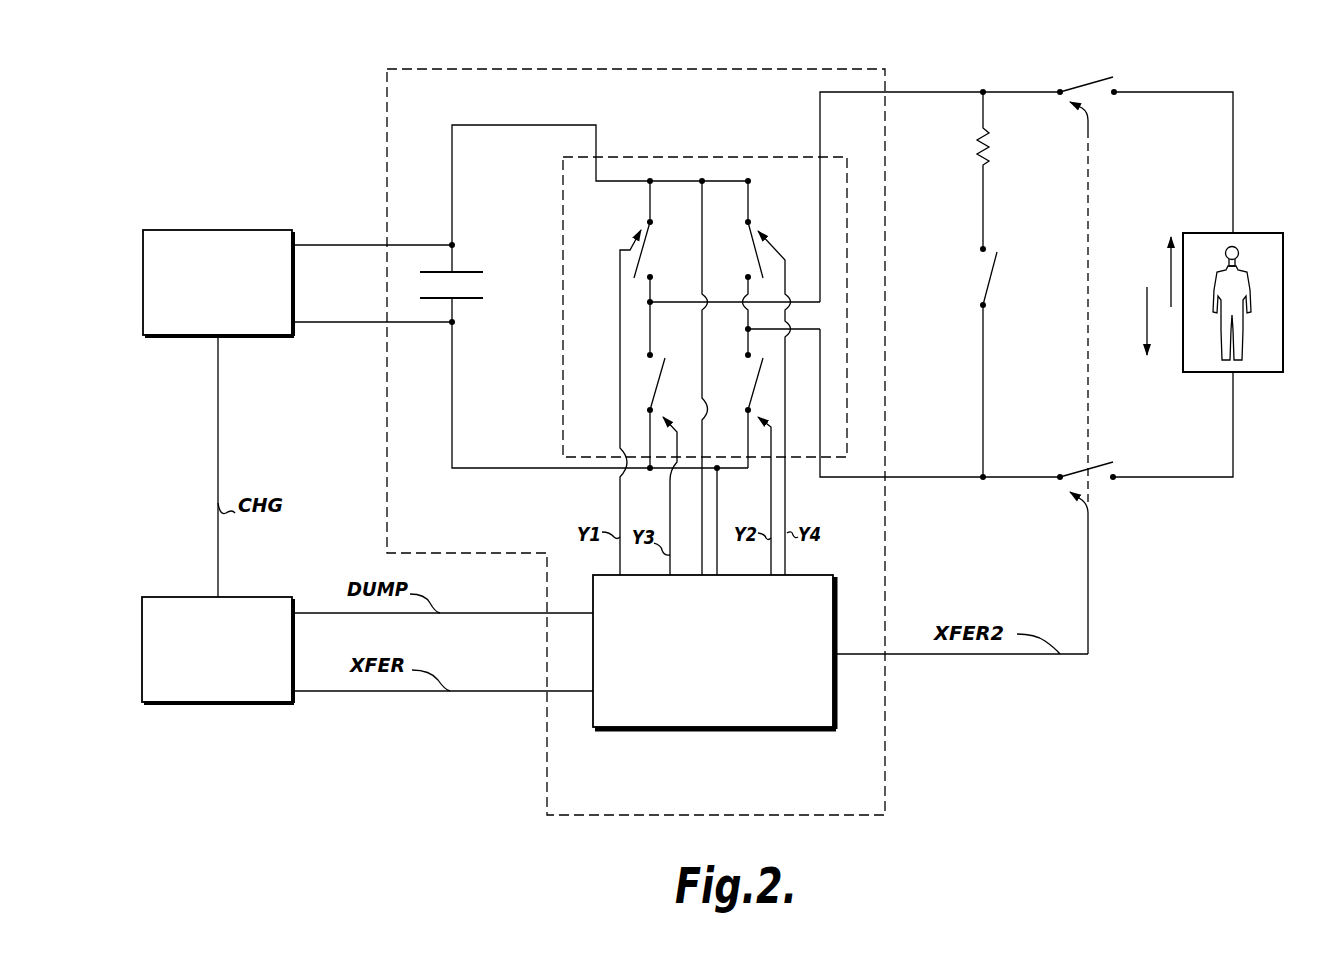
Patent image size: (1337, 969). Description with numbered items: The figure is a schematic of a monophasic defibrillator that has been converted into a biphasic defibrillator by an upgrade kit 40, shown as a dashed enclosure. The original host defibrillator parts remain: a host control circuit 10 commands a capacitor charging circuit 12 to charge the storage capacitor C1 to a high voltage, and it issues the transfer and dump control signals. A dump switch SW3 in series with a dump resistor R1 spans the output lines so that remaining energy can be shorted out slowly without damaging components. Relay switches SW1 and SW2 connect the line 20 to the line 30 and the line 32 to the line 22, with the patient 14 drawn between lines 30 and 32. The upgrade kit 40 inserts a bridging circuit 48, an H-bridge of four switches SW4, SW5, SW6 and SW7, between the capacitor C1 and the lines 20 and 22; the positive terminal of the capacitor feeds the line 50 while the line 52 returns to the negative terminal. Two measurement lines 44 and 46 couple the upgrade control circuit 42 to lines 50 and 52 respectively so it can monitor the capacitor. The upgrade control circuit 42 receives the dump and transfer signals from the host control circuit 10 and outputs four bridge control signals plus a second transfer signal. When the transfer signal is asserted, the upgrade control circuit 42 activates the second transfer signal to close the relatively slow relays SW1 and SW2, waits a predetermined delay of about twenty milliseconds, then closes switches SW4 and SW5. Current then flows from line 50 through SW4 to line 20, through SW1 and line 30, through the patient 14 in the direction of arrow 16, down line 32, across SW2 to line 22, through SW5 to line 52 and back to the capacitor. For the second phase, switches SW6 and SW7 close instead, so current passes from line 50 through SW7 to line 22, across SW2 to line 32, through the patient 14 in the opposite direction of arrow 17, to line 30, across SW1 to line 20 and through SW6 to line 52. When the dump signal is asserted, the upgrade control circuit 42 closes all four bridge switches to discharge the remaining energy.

The host control circuit 10 is at (142, 650).
The capacitor charging circuit 12 is at (143, 297).
The patient 14 is at (1283, 290).
The arrow 16 is at (1147, 317).
The arrow 17 is at (1171, 258).
The line 20 is at (650, 344).
The line 22 is at (747, 317).
The line 30 is at (1181, 92).
The line 32 is at (1182, 477).
The upgrade kit 40 is at (723, 69).
The upgrade control circuit 42 is at (707, 733).
The measurement line 44 is at (700, 530).
The measurement line 46 is at (717, 493).
The bridging circuit 48 is at (687, 157).
The line 50 is at (500, 125).
The line 52 is at (476, 469).
The storage capacitor C1 is at (459, 283).
The dump resistor R1 is at (997, 170).
The relay switch SW1 is at (1087, 85).
The relay switch SW2 is at (1097, 479).
The dump switch SW3 is at (991, 279).
The switch SW4 is at (628, 252).
The switch SW5 is at (735, 410).
The switch SW6 is at (647, 383).
The switch SW7 is at (757, 258).